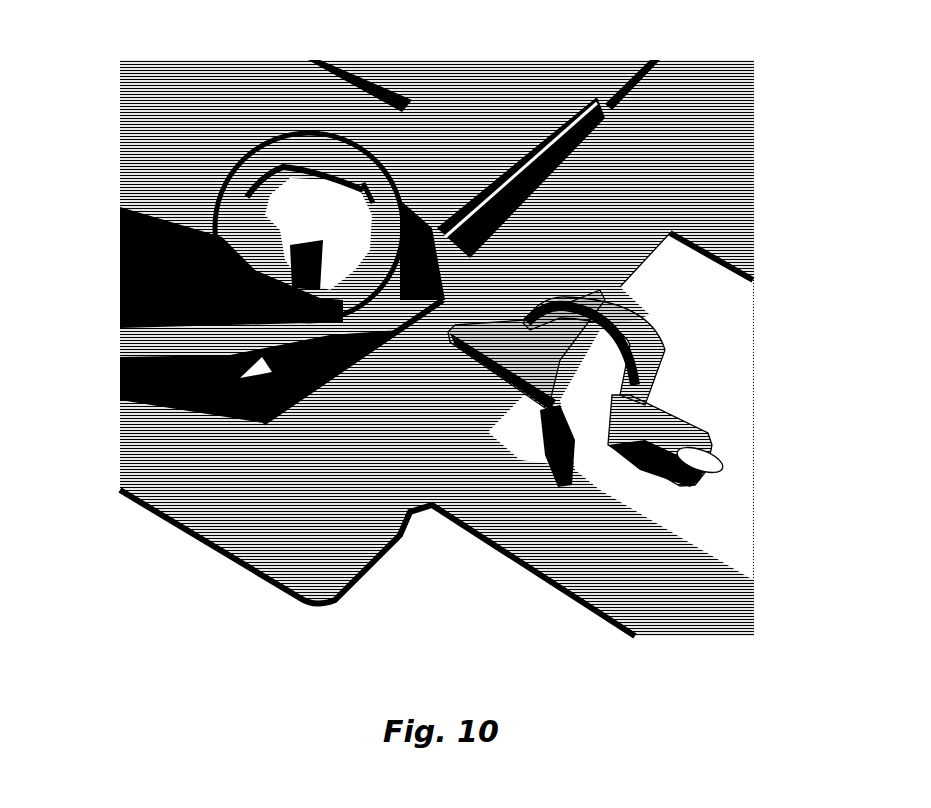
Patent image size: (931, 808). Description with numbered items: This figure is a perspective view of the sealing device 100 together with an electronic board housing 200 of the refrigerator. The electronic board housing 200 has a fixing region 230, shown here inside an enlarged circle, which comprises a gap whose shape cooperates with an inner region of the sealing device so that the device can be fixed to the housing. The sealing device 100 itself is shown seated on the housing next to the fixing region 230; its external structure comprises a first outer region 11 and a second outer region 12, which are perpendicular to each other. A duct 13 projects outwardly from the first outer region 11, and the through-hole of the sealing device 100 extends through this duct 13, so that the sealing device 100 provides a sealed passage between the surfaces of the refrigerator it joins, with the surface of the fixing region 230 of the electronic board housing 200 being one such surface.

The electronic board housing 200 is at (165, 148).
The fixing region 230 is at (250, 150).
The sealing device 100 is at (684, 336).
The first outer region 11 is at (594, 455).
The second outer region 12 is at (490, 335).
The duct 13 is at (690, 432).